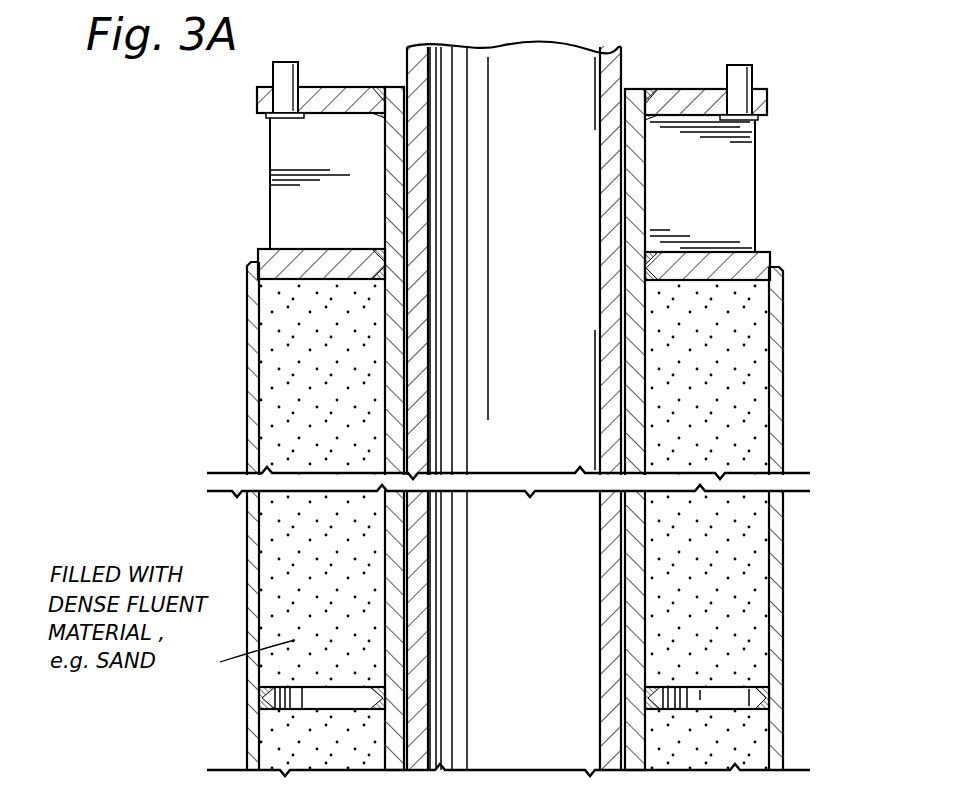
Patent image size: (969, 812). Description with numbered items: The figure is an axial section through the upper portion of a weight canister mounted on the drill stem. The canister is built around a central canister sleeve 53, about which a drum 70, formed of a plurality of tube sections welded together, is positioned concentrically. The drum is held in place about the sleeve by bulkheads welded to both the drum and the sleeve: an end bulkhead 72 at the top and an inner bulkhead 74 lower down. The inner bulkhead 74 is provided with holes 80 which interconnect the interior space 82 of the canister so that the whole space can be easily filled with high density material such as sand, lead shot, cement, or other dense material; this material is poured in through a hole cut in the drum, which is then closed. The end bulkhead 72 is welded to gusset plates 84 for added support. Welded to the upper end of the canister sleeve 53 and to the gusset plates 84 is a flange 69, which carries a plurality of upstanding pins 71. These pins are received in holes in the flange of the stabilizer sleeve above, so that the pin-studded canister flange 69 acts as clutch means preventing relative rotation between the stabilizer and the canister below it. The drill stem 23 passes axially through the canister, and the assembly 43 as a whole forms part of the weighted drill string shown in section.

The pipe 23 is at (622, 70).
The weight assembly 43 is at (785, 542).
The canister sleeve 53 is at (640, 346).
The canister flange 69 is at (347, 106).
The drum 70 is at (782, 404).
The pins 71 is at (300, 76).
The end bulkhead 72 is at (312, 268).
The inner bulkhead 74 is at (653, 697).
The holes 80 is at (738, 695).
The interior space 82 is at (745, 350).
The gusset plates 84 is at (300, 193).